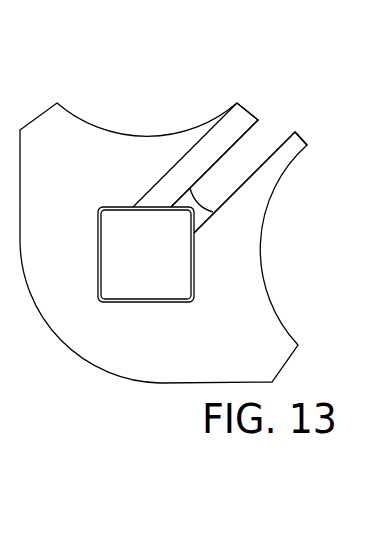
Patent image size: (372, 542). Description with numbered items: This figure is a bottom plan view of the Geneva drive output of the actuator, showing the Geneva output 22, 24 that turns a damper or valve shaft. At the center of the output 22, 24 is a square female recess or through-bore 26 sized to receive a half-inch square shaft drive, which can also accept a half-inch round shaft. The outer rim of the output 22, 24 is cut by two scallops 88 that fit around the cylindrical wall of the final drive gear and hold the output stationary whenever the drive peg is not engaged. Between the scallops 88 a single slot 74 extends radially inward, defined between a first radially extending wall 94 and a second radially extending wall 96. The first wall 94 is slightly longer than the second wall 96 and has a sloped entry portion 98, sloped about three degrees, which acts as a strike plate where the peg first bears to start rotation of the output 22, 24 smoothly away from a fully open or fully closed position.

The lower output 22 is at (171, 210).
The upper output 24 is at (171, 227).
The through-bore 26 is at (159, 267).
The slot 74 is at (247, 155).
The scallop 88 is at (158, 86).
The first radially extending wall 94 is at (262, 170).
The second radially extending wall 96 is at (250, 131).
The sloped entry portion 98 is at (288, 136).